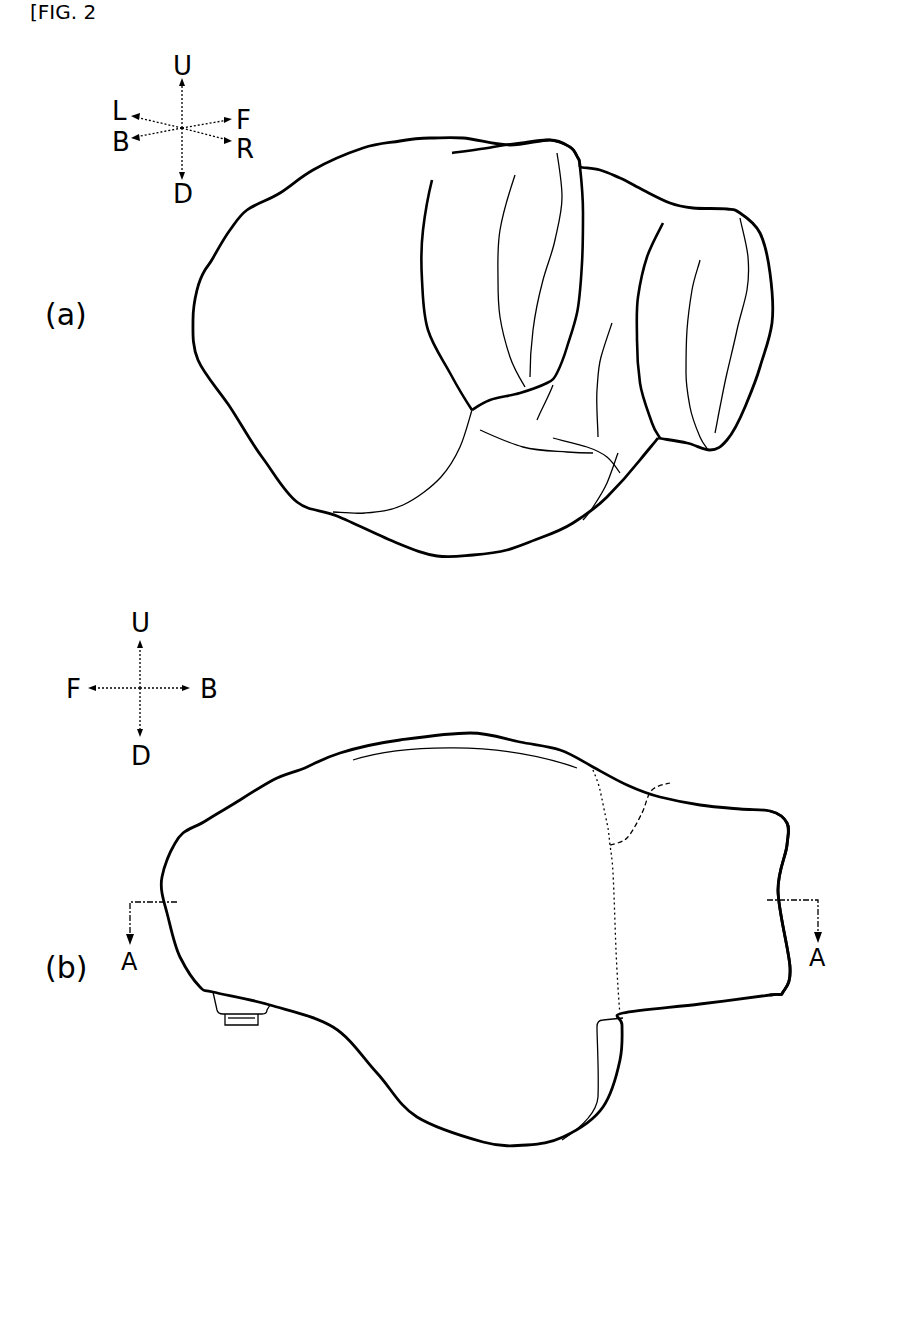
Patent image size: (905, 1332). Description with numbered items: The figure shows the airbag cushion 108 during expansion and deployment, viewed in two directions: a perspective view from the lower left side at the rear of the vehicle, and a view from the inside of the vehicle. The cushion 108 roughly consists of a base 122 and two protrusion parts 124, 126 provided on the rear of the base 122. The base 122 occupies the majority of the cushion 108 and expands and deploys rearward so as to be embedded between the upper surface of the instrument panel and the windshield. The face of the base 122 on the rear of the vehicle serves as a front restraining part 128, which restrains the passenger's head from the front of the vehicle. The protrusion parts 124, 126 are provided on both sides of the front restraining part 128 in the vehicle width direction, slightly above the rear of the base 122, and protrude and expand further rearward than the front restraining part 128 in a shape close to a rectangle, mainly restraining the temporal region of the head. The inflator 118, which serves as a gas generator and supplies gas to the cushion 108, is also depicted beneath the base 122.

The cushion 108 is at (363, 148).
The inflator 118 is at (240, 1030).
The base 122 is at (305, 430).
The protrusion part 124 is at (560, 140).
The protrusion part 126 is at (740, 213).
The front restraining part 128 is at (620, 473).